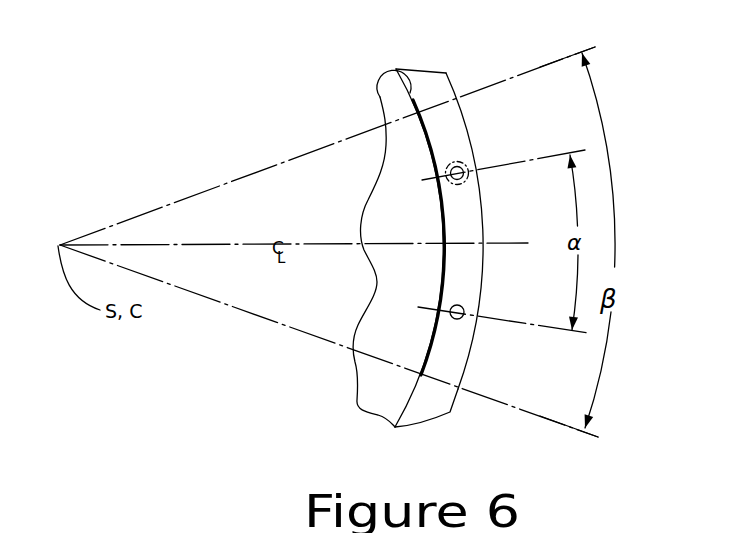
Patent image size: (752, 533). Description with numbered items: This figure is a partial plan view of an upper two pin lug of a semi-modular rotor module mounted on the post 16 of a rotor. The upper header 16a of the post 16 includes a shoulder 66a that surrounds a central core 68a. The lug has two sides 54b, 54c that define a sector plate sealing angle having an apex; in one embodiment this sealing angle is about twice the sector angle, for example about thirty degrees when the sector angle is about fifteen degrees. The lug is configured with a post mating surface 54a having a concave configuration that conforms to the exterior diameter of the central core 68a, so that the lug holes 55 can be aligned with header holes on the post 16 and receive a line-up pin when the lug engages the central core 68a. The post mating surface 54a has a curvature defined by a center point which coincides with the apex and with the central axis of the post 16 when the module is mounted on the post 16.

The post 16 is at (357, 370).
The upper header 16a is at (418, 427).
The post mating surface 54a is at (447, 233).
The side of upper two pin lug 54b is at (506, 80).
The side of upper two pin lug 54c is at (525, 408).
The lug hole 55 is at (463, 307).
The shoulder 66a is at (420, 68).
The central core 68a is at (404, 92).